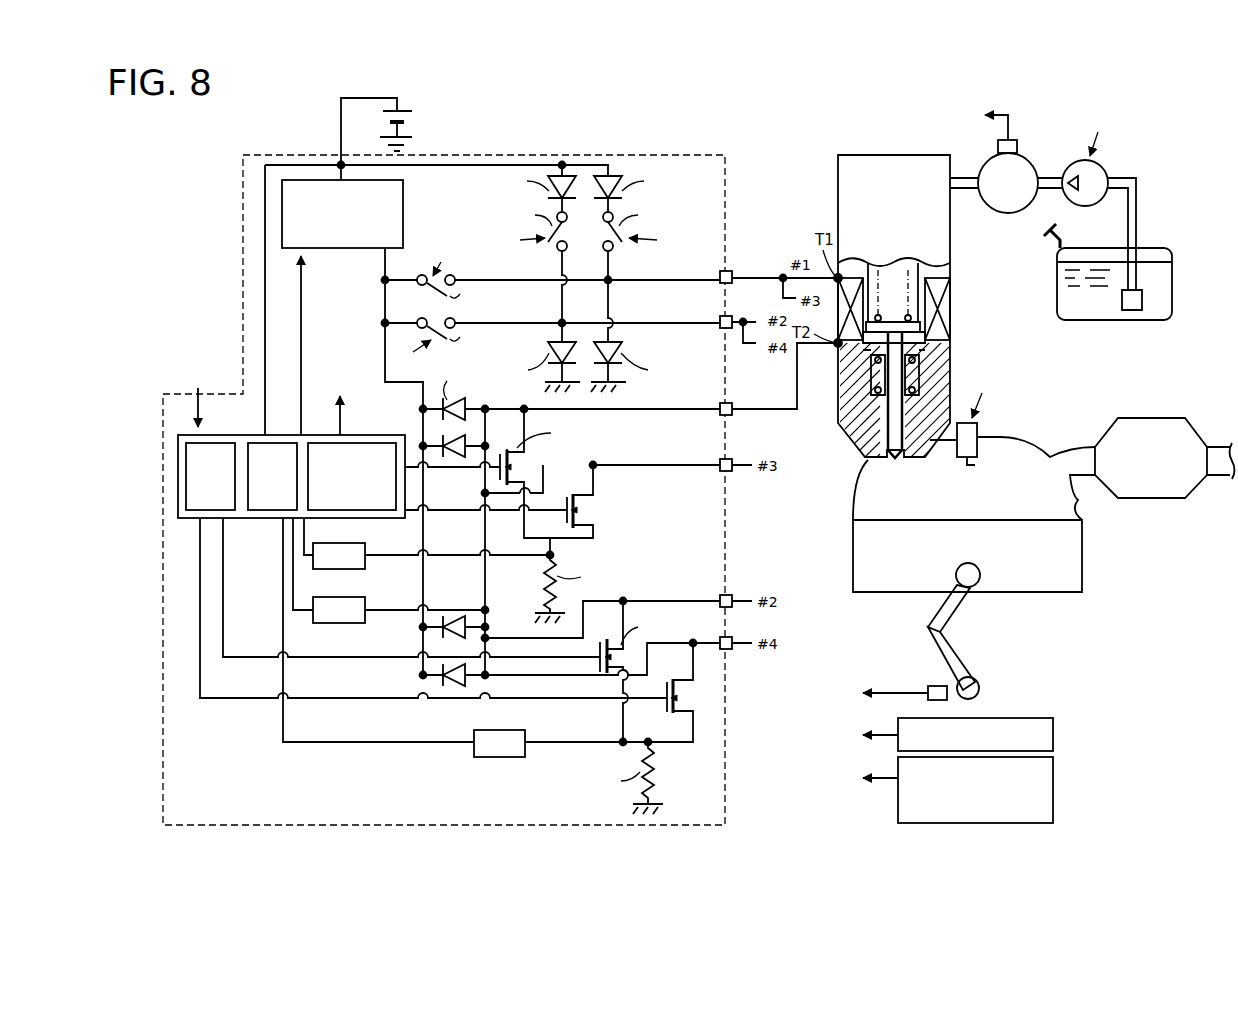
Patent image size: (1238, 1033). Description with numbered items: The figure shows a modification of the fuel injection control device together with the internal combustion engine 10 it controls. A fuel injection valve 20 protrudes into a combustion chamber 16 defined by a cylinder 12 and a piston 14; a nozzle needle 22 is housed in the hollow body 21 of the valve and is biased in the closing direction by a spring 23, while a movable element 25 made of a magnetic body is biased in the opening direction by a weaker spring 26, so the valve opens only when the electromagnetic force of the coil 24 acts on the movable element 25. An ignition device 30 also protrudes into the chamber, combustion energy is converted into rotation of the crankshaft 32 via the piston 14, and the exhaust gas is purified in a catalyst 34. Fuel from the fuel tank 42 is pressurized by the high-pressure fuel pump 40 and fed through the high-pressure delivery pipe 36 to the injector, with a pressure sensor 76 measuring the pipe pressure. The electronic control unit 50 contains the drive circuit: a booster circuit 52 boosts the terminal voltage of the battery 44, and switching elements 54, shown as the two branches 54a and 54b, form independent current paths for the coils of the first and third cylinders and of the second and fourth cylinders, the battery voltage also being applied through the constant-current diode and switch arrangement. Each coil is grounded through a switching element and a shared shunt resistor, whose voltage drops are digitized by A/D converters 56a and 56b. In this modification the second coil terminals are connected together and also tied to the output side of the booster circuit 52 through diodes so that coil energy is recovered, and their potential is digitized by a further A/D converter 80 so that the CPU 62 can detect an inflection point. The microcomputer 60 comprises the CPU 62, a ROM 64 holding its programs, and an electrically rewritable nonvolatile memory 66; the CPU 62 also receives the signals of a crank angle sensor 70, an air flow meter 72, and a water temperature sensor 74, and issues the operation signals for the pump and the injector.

The internal combustion engine 10 is at (1072, 96).
The cylinder 12 is at (1080, 515).
The piston 14 is at (1083, 552).
The combustion chamber 16 is at (980, 507).
The fuel injection valve 20 is at (924, 329).
The hollow body 21 is at (948, 374).
The nozzle needle 22 is at (868, 456).
The spring 23 is at (942, 270).
The coil 24 is at (935, 306).
The movable element 25 is at (926, 341).
The spring 26 is at (860, 391).
The ignition device 30 is at (978, 432).
The crankshaft 32 is at (980, 690).
The catalyst 34 is at (1150, 421).
The high-pressure delivery pipe 36 is at (1037, 162).
The high-pressure fuel pump 40 is at (1105, 168).
The fuel tank 42 is at (1150, 248).
The battery 44 is at (406, 110).
The electronic control unit 50 is at (690, 153).
The booster circuit 52 is at (310, 180).
The switching circuit 54 is at (588, 236).
The switching circuit 54a is at (618, 157).
The switching circuit 54b is at (566, 157).
The A/D converter 56a is at (330, 543).
The A/D converter 56b is at (500, 730).
The microcomputer 60 is at (291, 456).
The CPU 62 is at (213, 443).
The ROM 64 is at (275, 443).
The nonvolatile memory 66 is at (332, 443).
The crank angle sensor 70 is at (932, 686).
The air flow meter 72 is at (1055, 739).
The water temperature sensor 74 is at (1055, 781).
The pressure sensor 76 is at (1014, 138).
The A/D converter 80 is at (343, 597).